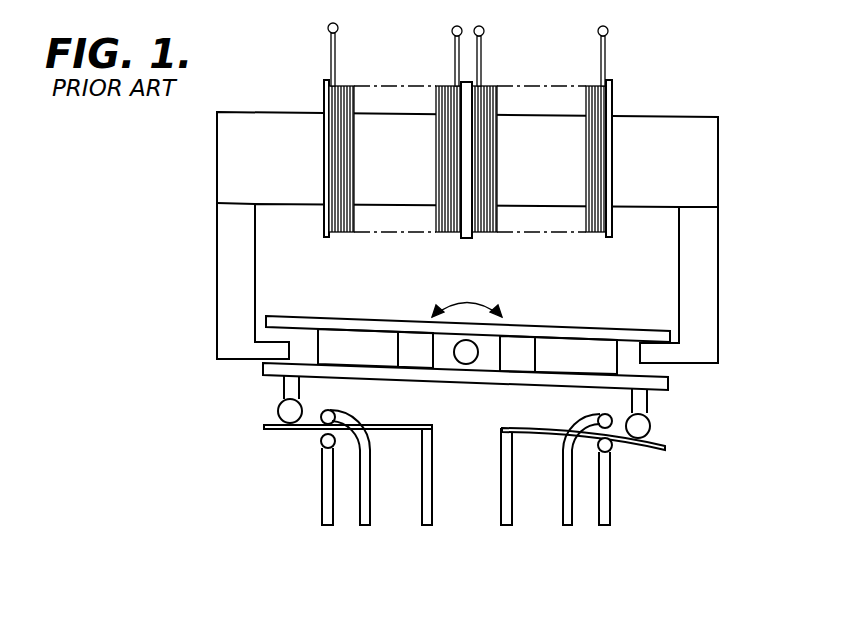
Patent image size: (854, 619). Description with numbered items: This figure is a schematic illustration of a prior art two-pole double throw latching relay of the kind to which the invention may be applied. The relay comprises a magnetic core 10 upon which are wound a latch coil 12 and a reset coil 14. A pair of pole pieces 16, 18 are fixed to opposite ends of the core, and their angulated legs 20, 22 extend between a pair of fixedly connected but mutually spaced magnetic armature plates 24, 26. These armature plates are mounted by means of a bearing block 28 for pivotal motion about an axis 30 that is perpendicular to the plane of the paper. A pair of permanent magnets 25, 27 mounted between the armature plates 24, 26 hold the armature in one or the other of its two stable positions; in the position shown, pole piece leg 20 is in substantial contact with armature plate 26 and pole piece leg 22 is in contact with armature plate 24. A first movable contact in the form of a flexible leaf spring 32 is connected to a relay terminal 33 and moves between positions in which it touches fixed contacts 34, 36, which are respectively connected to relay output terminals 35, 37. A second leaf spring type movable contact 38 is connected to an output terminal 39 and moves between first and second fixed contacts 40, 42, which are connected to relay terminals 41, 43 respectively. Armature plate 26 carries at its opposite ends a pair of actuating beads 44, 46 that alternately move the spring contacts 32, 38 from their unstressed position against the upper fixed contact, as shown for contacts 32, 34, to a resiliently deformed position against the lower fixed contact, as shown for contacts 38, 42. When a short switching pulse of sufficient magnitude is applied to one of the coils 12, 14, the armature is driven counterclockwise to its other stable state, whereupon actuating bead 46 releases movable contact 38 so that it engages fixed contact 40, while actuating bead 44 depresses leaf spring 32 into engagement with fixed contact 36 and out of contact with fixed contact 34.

The magnetic core 10 is at (647, 118).
The latch coil 12 is at (352, 86).
The reset coil 14 is at (492, 87).
The pole piece 16 is at (220, 261).
The pole piece 18 is at (712, 262).
The angulated leg 20 is at (275, 349).
The angulated leg 22 is at (657, 357).
The magnetic armature plate 24 is at (290, 317).
The permanent magnet 25 is at (387, 329).
The magnetic armature plate 26 is at (273, 372).
The permanent magnet 27 is at (560, 332).
The bearing block 28 is at (488, 366).
The axis 30 is at (464, 365).
The flexible leaf spring 32 is at (268, 432).
The relay terminal 33 is at (432, 458).
The fixed contact 34 is at (335, 415).
The relay output terminal 35 is at (370, 485).
The fixed contact 36 is at (322, 444).
The relay output terminal 37 is at (320, 506).
The leaf spring type movable contact 38 is at (658, 440).
The output terminal 39 is at (503, 482).
The fixed contact 40 is at (598, 418).
The relay terminal 41 is at (563, 474).
The fixed contact 42 is at (612, 447).
The relay terminal 43 is at (612, 505).
The actuating bead 44 is at (278, 410).
The actuating bead 46 is at (648, 421).